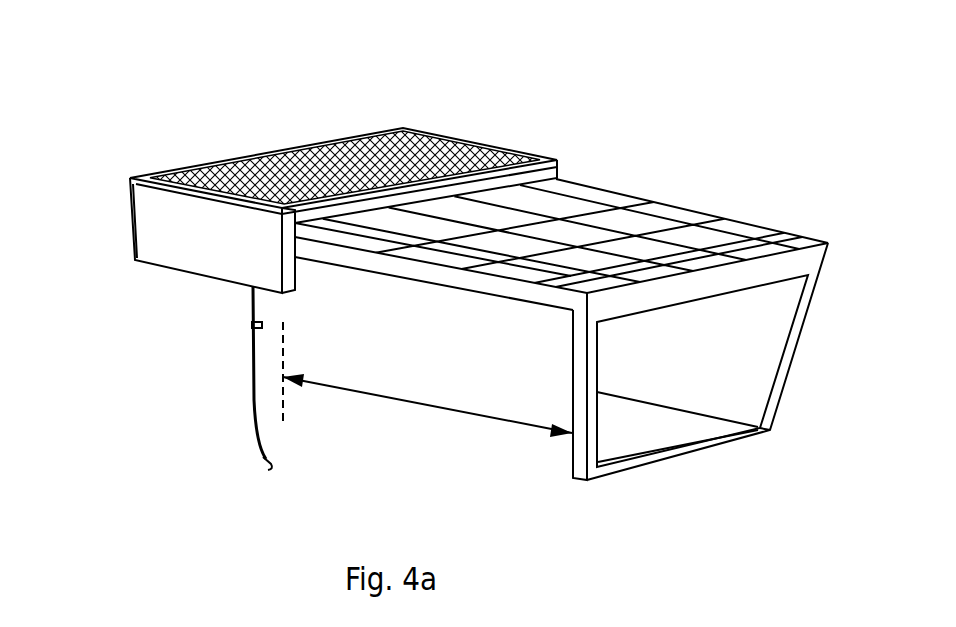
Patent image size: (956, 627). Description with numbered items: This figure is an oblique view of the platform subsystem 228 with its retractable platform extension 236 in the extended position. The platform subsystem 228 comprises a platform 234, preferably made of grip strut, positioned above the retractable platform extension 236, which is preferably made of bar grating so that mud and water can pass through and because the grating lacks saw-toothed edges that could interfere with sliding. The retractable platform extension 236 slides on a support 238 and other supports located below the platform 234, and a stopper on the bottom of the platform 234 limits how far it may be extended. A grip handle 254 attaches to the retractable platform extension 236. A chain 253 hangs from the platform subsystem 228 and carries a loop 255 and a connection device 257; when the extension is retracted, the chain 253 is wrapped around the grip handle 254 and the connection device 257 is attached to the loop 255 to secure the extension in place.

The platform subsystem 228 is at (214, 90).
The platform 234 is at (468, 140).
The retractable platform extension 236 is at (657, 203).
The support 238 is at (352, 277).
The chain 253 is at (250, 358).
The grip handle 254 is at (627, 472).
The loop 255 is at (262, 322).
The connection device 257 is at (262, 460).